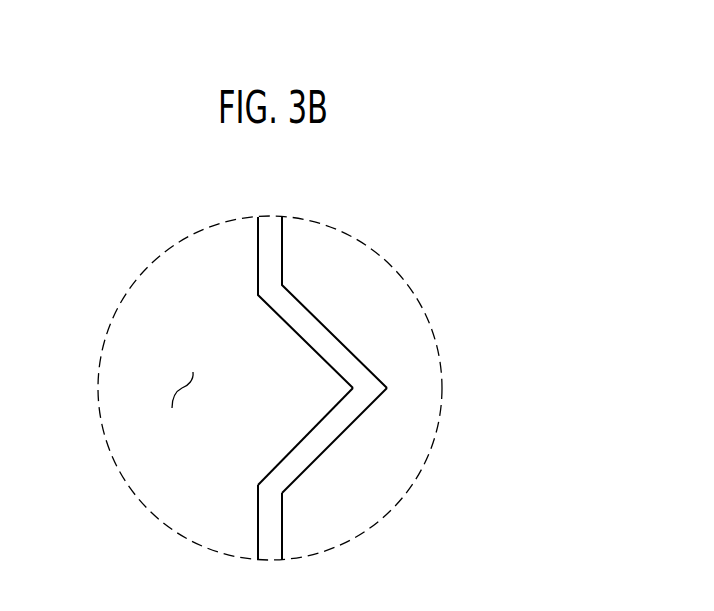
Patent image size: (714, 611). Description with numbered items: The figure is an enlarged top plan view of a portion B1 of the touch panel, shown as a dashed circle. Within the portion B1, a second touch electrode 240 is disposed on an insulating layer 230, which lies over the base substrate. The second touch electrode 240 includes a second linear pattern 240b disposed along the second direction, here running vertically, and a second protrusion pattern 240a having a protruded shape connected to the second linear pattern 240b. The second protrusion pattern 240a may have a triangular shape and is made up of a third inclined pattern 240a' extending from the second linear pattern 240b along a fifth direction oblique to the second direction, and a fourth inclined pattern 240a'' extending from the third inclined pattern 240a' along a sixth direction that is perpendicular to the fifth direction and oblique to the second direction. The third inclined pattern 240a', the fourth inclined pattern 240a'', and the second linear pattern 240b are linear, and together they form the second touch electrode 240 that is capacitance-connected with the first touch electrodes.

The portion B1 is at (183, 240).
The insulating layer 230 is at (182, 387).
The second touch electrode 240 is at (441, 388).
The second protrusion pattern 240a is at (419, 355).
The third inclined pattern 240a' is at (385, 302).
The fourth inclined pattern 240a'' is at (386, 440).
The second linear pattern 240b is at (283, 527).